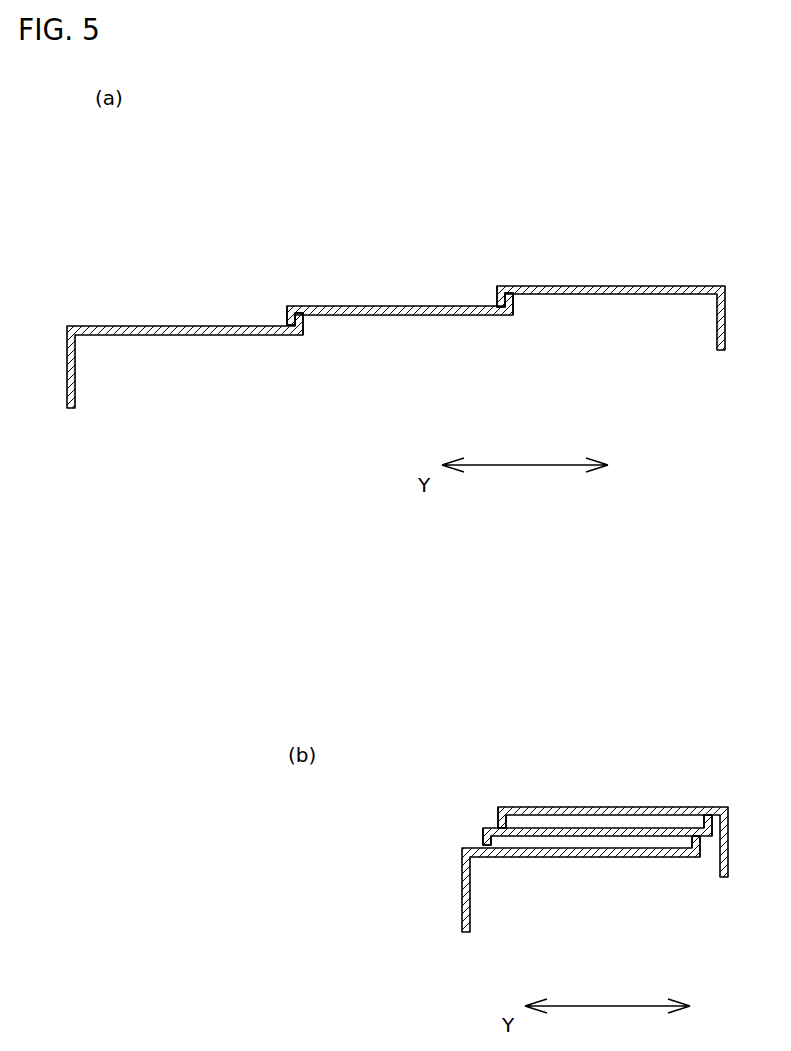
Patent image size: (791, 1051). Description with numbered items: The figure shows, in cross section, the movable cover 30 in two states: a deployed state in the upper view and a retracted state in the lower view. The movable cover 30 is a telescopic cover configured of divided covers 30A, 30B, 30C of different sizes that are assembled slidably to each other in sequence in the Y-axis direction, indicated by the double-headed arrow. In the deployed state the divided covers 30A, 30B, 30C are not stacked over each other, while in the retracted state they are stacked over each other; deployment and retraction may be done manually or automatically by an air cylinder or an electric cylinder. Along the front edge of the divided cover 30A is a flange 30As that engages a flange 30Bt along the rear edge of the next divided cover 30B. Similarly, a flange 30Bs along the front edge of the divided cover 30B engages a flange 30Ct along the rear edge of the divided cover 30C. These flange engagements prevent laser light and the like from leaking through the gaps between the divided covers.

The movable cover 30 is at (630, 182).
The divided cover 30A is at (594, 275).
The divided cover 30B is at (369, 293).
The divided cover 30C is at (145, 312).
The flange 30As is at (496, 300).
The flange 30Bs is at (284, 320).
The flange 30Bt is at (514, 300).
The flange 30Ct is at (309, 322).